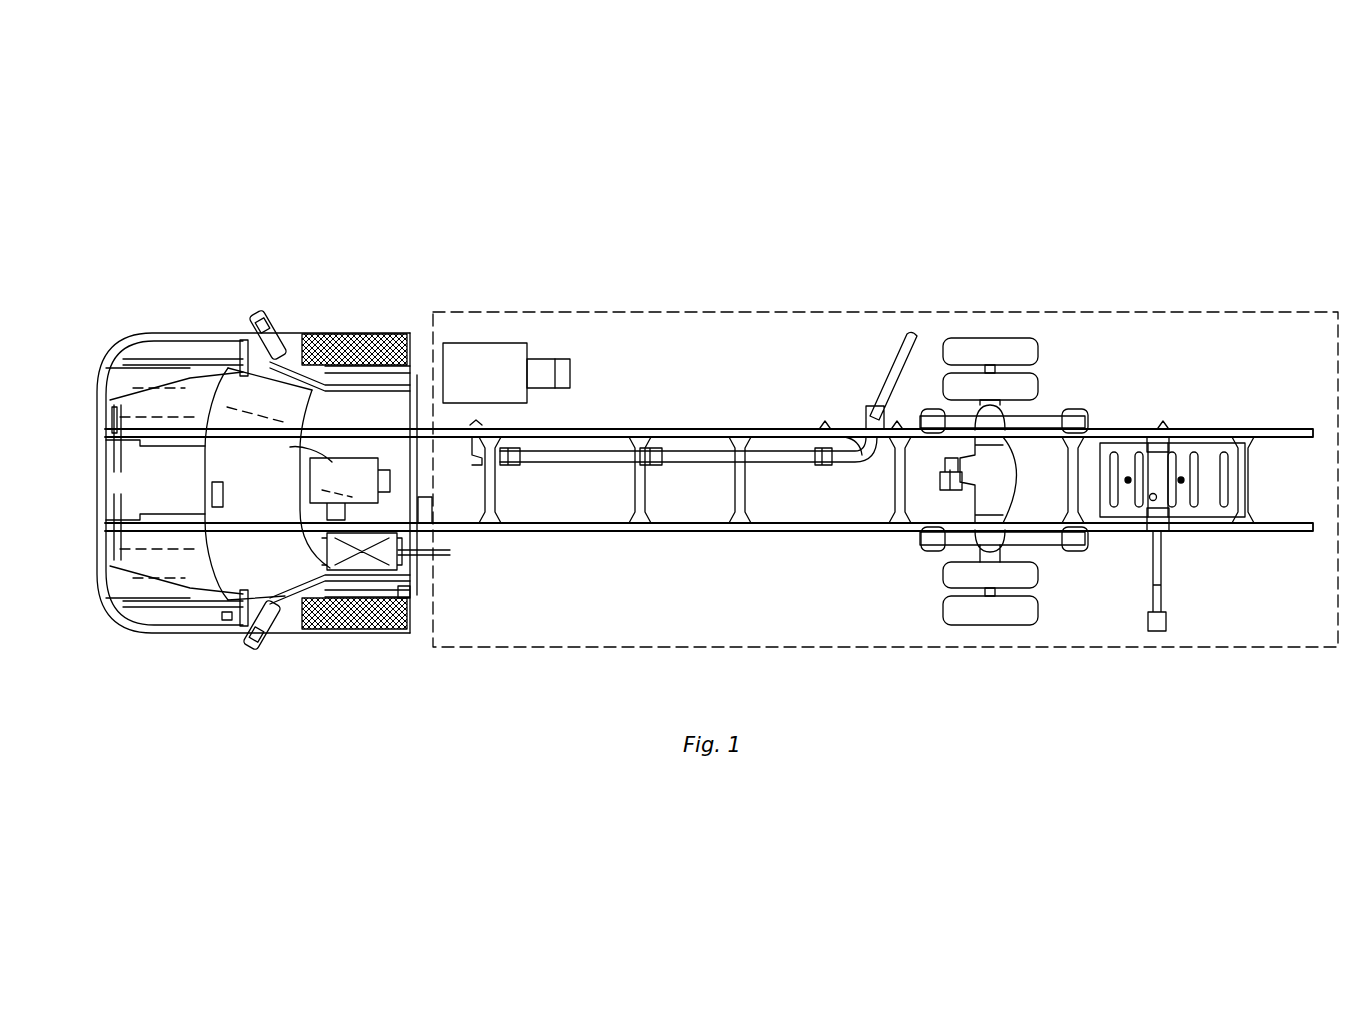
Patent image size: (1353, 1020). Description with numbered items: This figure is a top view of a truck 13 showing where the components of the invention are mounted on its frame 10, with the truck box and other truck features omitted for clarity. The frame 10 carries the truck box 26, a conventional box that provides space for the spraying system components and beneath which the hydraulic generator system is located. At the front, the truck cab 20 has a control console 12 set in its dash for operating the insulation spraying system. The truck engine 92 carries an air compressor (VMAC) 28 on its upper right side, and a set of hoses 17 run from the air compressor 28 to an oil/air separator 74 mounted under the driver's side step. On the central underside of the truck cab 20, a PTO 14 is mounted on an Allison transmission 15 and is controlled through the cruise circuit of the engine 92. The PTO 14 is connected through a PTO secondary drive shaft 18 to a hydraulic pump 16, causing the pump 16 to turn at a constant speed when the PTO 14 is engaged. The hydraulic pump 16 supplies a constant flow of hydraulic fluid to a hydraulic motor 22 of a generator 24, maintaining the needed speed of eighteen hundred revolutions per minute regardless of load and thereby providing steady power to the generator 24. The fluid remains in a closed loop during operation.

The truck 13 is at (556, 210).
The frame 10 is at (743, 432).
The truck box 26 is at (850, 345).
The generator 24 is at (478, 370).
The hydraulic motor 22 is at (538, 368).
The control console 12 is at (224, 490).
The truck engine 92 is at (130, 523).
The air compressor (VMAC) 28 is at (156, 405).
The truck cab 20 is at (247, 390).
The Allison transmission 15 is at (345, 475).
The oil/air separator 74 is at (410, 593).
The set of hoses 17 is at (310, 452).
The PTO secondary drive shaft 18 is at (409, 385).
The PTO (Powered Take-Off system) 14 is at (228, 617).
The hydraulic pump 16 is at (423, 505).